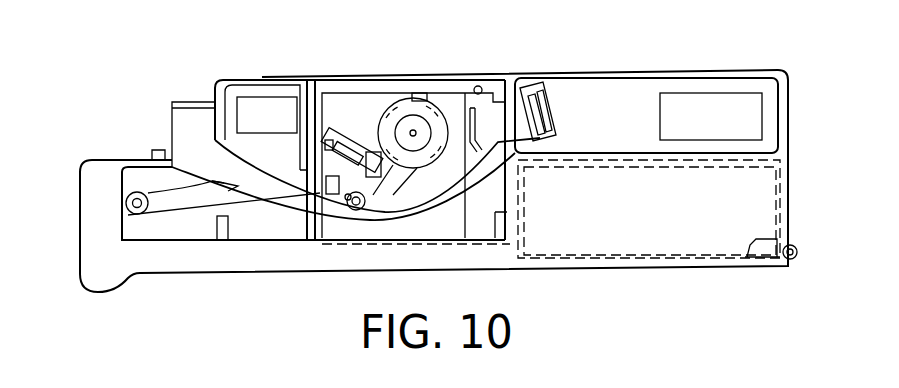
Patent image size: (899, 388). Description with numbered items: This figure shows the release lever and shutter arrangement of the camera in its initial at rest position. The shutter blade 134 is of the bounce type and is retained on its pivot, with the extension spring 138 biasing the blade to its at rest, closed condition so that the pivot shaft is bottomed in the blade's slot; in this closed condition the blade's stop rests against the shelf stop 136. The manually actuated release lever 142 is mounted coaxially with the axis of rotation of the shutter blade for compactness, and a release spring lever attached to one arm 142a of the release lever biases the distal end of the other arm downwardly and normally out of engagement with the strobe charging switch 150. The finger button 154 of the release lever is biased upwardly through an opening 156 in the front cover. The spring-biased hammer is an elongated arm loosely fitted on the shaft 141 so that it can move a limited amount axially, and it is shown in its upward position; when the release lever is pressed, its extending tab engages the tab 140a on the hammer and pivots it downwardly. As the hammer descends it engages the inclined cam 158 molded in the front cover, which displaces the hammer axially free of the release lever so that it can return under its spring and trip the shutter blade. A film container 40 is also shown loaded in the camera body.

The film container 40 is at (763, 193).
The shutter blade 134 is at (388, 140).
The shelf stop 136 is at (418, 100).
The extension spring 138 is at (345, 143).
The tab 140a is at (190, 192).
The shaft 141 is at (132, 202).
The release lever 142 is at (172, 125).
The arm 142a is at (133, 183).
The strobe charging switch 150 is at (548, 100).
The finger button 154 is at (190, 100).
The opening 156 is at (157, 160).
The inclined cam 158 is at (207, 240).